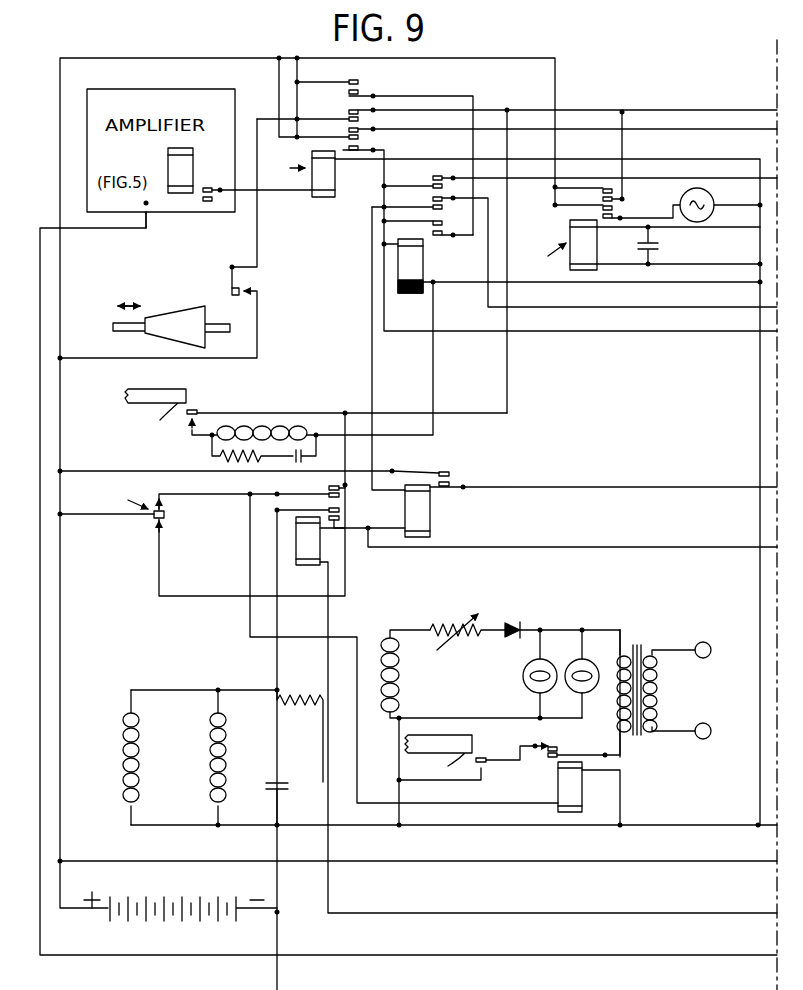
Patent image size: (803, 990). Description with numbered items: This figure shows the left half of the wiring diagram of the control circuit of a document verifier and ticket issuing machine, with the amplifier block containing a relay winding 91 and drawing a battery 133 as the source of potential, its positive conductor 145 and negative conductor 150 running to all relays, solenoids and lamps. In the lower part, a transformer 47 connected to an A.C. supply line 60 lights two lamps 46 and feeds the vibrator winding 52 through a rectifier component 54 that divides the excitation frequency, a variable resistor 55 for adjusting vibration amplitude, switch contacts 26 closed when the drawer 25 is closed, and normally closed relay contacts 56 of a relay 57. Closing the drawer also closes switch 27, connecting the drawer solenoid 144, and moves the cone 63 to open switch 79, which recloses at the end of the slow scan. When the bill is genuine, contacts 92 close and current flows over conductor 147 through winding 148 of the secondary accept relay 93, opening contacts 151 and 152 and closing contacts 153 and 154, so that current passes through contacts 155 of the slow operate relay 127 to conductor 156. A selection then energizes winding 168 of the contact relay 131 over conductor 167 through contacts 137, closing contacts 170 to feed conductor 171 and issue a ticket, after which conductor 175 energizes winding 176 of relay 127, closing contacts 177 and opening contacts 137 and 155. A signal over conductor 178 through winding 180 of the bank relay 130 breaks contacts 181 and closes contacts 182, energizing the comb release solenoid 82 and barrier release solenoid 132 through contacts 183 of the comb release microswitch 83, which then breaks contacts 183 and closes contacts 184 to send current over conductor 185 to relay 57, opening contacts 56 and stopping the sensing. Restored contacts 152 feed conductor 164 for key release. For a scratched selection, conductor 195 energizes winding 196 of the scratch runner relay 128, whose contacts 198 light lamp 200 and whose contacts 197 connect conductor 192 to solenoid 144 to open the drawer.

The positive conductor 145 is at (60, 155).
The conductor 147 is at (40, 256).
The relay coil 91 is at (190, 165).
The contacts 92 is at (207, 202).
The secondary accept relay 93 is at (285, 168).
The winding of relay 93 148 is at (315, 197).
The contacts 153 is at (356, 86).
The contacts 151 is at (360, 118).
The contacts 152 is at (360, 136).
The contacts 154 is at (352, 152).
The contacts 155 is at (436, 178).
The contacts 137 is at (436, 205).
The contacts 177 is at (437, 237).
The winding of Slow Operate relay 176 is at (421, 270).
The slow operate relay 127 is at (399, 266).
The scratch runner relay 128 is at (539, 255).
The winding of relay 128 196 is at (597, 245).
The conductor 195 is at (698, 228).
The contacts 197 is at (607, 187).
The contacts 198 is at (613, 217).
The lamp 200 is at (710, 198).
The conductor 156 is at (672, 178).
The conductor 164 is at (672, 131).
The conductor 192 is at (700, 111).
The conductor 167 is at (647, 307).
The conductor 175 is at (632, 331).
The negative conductor 150 is at (760, 413).
The conductor 171 is at (603, 475).
The switch 79 is at (229, 300).
The cone 63 is at (193, 312).
The drawer 25 is at (186, 390).
The switch 27 is at (199, 410).
The drawer solenoid 144 is at (268, 423).
The contacts 170 is at (441, 470).
The contact relay 131 is at (453, 529).
The winding of relay 131 168 is at (418, 538).
The contacts 181 is at (329, 489).
The contacts 182 is at (338, 516).
The contacts 183 is at (162, 521).
The contacts 184 is at (161, 500).
The microswitch 83 is at (126, 498).
The bank relay 130 is at (418, 663).
The winding of Bank relay 180 is at (296, 561).
The conductor 185 is at (250, 610).
The barrier release solenoid 132 is at (122, 760).
The comb release solenoid 82 is at (210, 759).
The battery 133 is at (185, 902).
The variable resistor 55 is at (455, 623).
The rectifier component 54 is at (519, 622).
The lamps 46 is at (540, 662).
The winding 52 is at (399, 670).
The transformer 47 is at (650, 635).
The AC supply 60 is at (731, 676).
The switch contacts 26 is at (484, 757).
The relay contacts 56 is at (553, 753).
The relay 57 is at (560, 772).
The conductor 178 is at (678, 913).